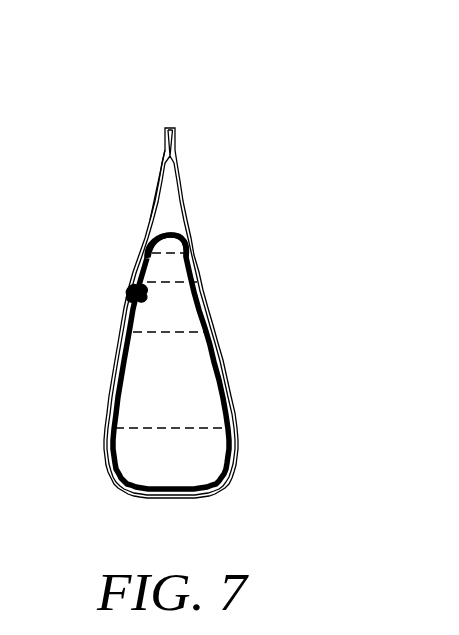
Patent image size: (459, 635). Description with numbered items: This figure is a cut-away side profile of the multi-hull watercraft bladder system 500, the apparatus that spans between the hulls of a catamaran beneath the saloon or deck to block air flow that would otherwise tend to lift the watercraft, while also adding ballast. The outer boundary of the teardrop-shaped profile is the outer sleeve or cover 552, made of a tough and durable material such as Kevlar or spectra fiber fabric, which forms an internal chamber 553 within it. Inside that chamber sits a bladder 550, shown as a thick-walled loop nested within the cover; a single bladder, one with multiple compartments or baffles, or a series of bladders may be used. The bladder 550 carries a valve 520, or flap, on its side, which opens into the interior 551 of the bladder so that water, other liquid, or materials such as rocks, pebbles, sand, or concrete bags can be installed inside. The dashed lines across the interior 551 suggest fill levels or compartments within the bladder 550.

The multi-hull watercraft bladder system 500 is at (175, 279).
The valve 520 is at (128, 290).
The bladder 550 is at (170, 234).
The interior of the bladder 551 is at (188, 387).
The outer sleeve or cover 552 is at (237, 441).
The internal chamber 553 is at (165, 200).